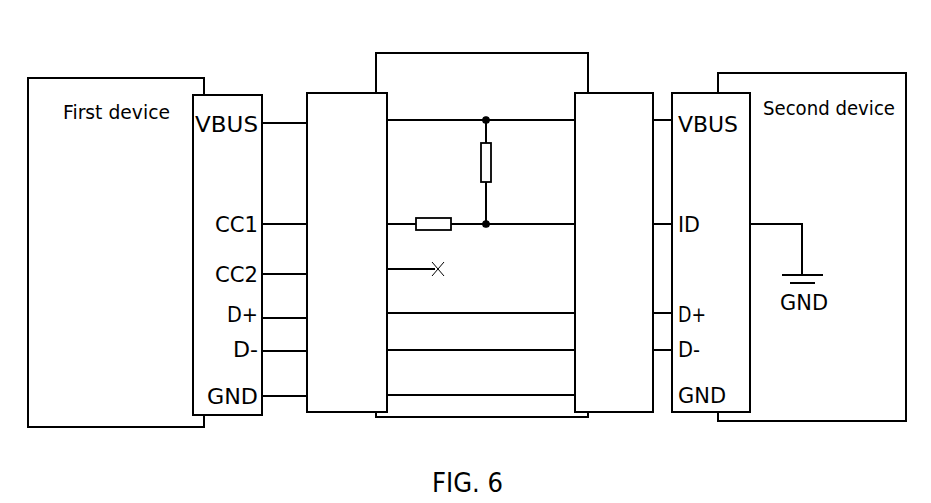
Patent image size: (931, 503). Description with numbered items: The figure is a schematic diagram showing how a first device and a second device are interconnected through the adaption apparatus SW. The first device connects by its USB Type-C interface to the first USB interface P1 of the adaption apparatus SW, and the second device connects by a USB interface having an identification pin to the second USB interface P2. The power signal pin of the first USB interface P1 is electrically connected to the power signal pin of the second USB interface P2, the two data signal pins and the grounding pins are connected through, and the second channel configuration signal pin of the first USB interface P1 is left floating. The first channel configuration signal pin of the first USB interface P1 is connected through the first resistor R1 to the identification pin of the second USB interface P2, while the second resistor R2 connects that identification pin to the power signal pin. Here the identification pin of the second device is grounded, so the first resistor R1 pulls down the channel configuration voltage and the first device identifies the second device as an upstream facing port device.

The first USB interface P1 is at (327, 92).
The second USB interface P2 is at (613, 92).
The adaption apparatus SW is at (482, 235).
The first resistor R1 is at (433, 211).
The second resistor R2 is at (501, 172).